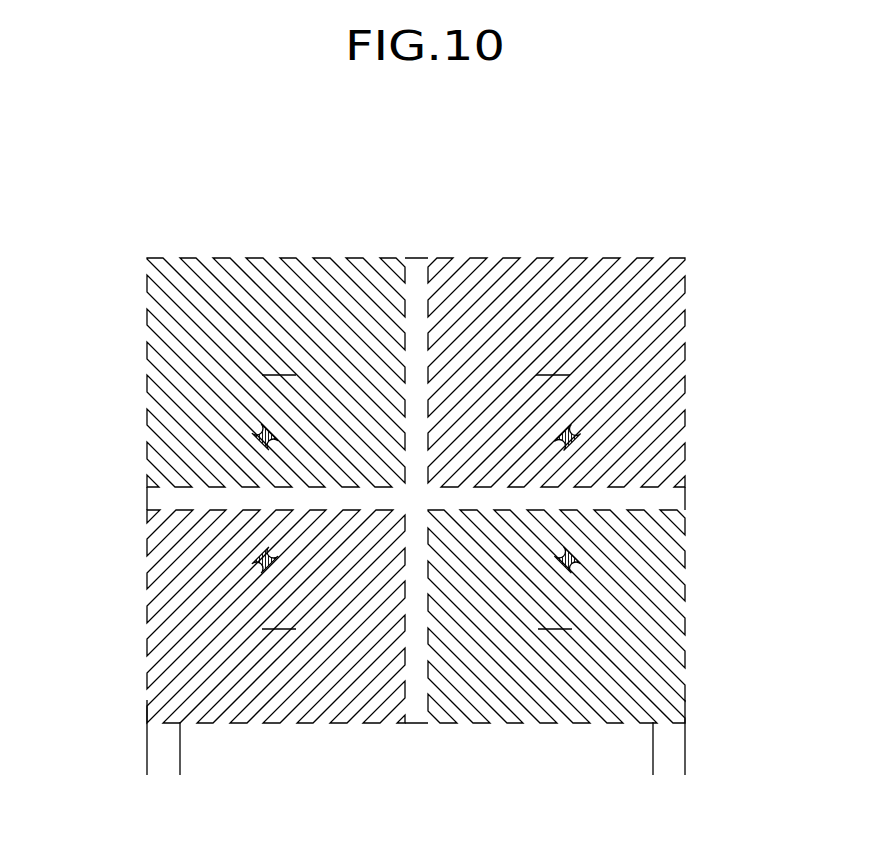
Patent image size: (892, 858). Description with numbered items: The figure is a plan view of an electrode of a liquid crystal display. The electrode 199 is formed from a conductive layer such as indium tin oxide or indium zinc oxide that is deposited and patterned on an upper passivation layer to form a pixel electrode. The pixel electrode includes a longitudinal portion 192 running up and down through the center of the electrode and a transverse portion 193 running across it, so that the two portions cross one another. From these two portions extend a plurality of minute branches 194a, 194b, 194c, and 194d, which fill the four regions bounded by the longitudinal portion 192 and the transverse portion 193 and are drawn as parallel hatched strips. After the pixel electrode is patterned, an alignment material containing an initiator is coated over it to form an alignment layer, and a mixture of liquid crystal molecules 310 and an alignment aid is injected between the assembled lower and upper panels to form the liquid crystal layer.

The pixel electrode 199 is at (700, 204).
The longitudinal portion 192 is at (429, 356).
The transverse portion 193 is at (600, 513).
The minute branch 194a is at (278, 298).
The minute branch 194b is at (595, 298).
The minute branch 194c is at (177, 627).
The minute branch 194d is at (602, 687).
The liquid crystal molecules 310 is at (580, 425).